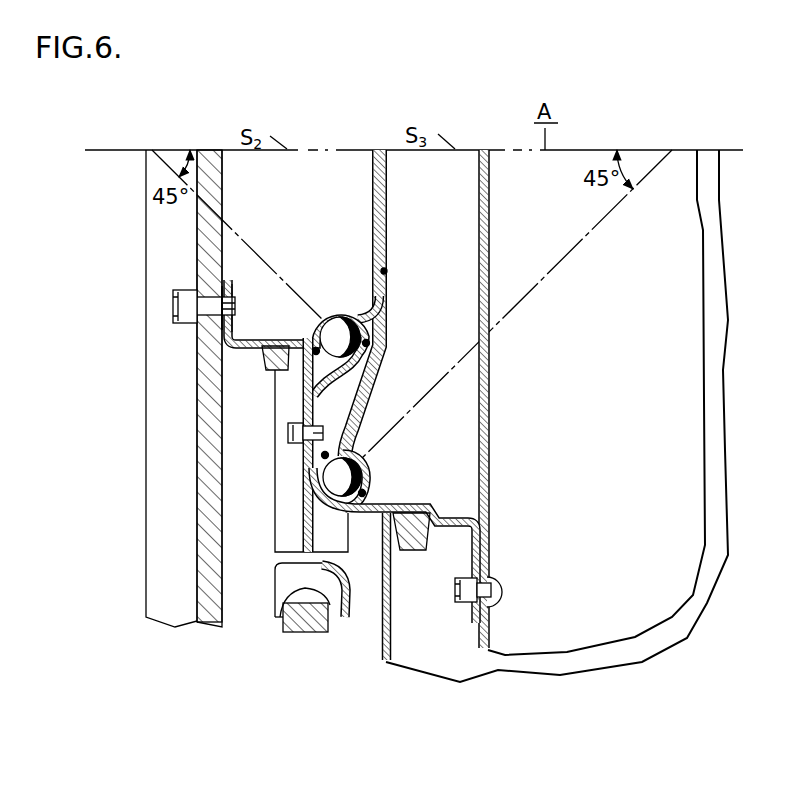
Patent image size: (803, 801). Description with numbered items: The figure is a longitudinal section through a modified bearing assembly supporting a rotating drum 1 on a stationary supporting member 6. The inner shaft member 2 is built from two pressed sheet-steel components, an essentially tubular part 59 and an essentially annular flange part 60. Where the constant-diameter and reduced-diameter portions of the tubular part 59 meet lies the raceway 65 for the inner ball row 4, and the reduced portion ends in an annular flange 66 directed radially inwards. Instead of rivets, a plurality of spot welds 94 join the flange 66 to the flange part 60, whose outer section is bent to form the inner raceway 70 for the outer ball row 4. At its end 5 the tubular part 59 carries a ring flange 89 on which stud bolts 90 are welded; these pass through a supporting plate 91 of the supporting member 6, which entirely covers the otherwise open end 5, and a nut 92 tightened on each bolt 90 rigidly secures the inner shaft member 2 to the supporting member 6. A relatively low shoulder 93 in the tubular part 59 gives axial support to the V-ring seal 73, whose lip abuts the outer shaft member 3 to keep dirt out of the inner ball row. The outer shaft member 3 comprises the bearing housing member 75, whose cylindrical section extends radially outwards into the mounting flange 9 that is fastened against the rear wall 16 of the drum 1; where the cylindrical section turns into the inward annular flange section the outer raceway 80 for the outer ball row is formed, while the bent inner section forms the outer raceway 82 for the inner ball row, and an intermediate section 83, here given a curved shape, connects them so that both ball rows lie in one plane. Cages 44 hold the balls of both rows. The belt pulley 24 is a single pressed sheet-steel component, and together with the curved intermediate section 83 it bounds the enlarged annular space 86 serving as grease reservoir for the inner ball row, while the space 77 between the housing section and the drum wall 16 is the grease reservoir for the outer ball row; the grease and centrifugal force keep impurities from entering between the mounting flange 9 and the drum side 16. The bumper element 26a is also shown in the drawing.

The drum 1 is at (699, 300).
The inner shaft member 2 is at (394, 313).
The outer shaft member 3 is at (421, 505).
The ball row 4 is at (340, 330).
The end of body portion 5 is at (232, 347).
The supporting member 6 is at (144, 265).
The mounting flange 9 is at (475, 568).
The rear wall of the drum 16 is at (490, 385).
The belt pulley 24 is at (304, 494).
The bumper 26a is at (303, 626).
The cage 44 is at (374, 318).
The essentially tubular part 59 is at (240, 340).
The essentially annular flange part 60 is at (360, 388).
The raceway for the inner ball row 65 is at (333, 310).
The annular flange 66 is at (377, 248).
The inner raceway for the outer ball row 70 is at (350, 462).
The seal 73 is at (268, 370).
The bearing housing member 75 is at (375, 505).
The space 77 is at (462, 500).
The outer raceway for the outer ball row 80 is at (326, 505).
The outer raceway for the inner ball row 82 is at (375, 345).
The intermediate section 83 is at (345, 378).
The annular space 86 is at (293, 378).
The ring flange 89 is at (224, 278).
The stud bolt 90 is at (227, 305).
The supporting plate 91 is at (208, 221).
The nut 92 is at (178, 319).
The shoulder 93 is at (255, 345).
The spot weld 94 is at (386, 271).